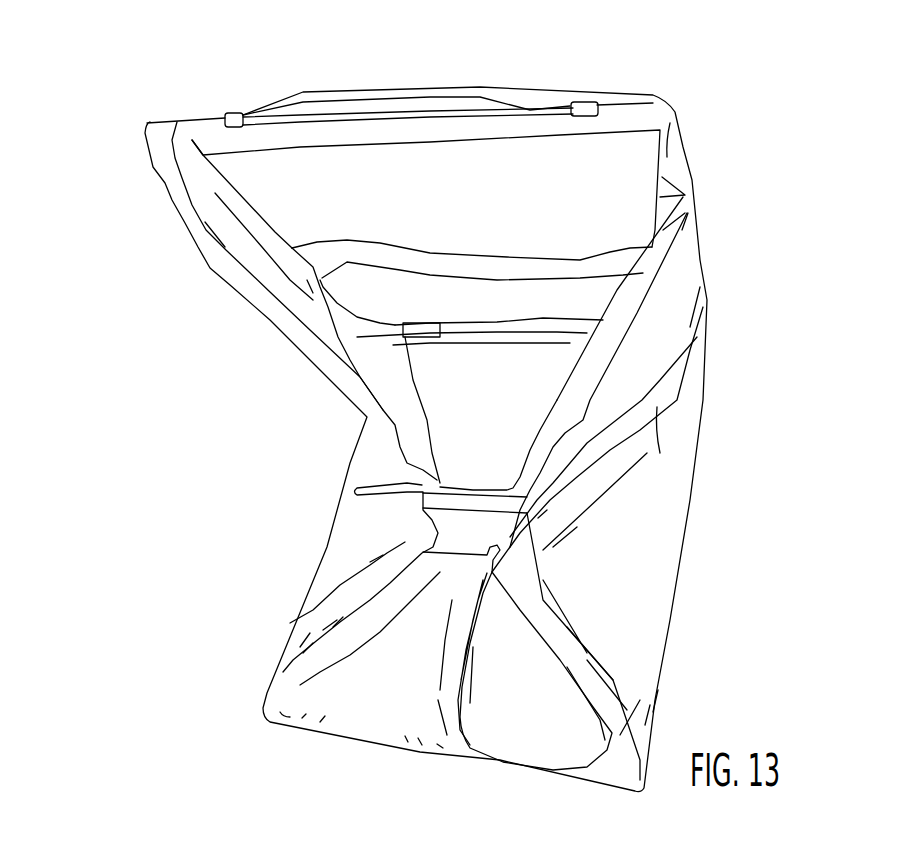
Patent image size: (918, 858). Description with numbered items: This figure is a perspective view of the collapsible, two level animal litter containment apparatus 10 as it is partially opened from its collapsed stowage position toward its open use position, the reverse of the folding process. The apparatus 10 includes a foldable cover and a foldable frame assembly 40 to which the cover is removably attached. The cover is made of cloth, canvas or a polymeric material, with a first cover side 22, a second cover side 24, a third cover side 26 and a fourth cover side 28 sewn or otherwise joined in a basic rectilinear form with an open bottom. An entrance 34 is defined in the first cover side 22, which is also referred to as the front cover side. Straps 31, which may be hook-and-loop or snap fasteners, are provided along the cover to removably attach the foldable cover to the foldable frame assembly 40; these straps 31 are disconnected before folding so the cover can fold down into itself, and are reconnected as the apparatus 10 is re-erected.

The collapsible, two level animal litter containment apparatus 10 is at (651, 70).
The first cover side 22 is at (419, 668).
The second cover side 24 is at (665, 503).
The third cover side 26 is at (530, 90).
The fourth cover side 28 is at (335, 550).
The straps 31 is at (232, 113).
The entrance 34 is at (573, 742).
The foldable frame assembly 40 is at (343, 112).